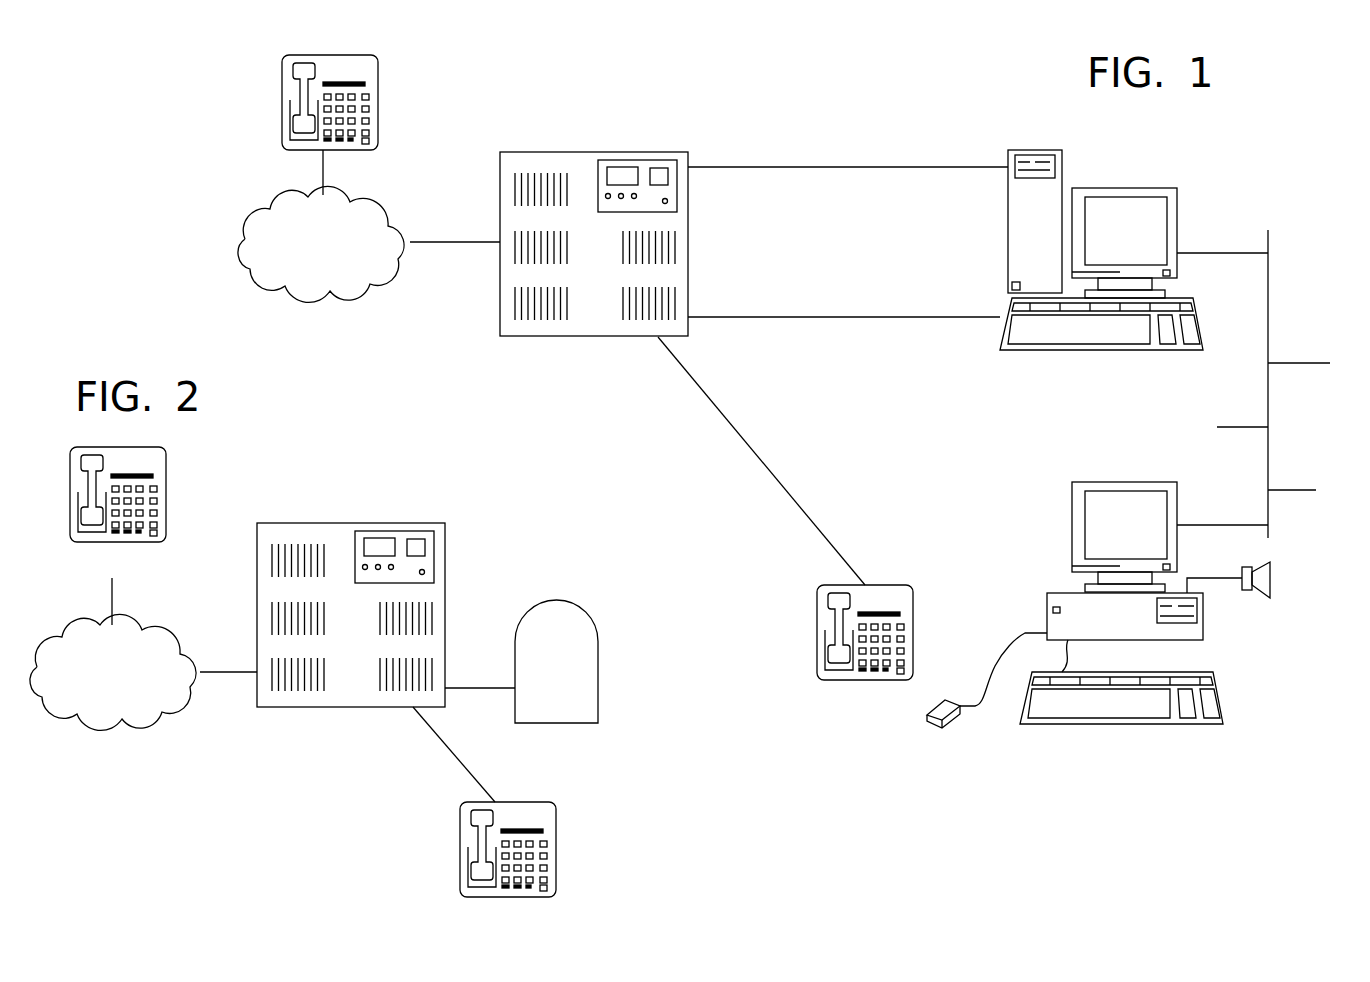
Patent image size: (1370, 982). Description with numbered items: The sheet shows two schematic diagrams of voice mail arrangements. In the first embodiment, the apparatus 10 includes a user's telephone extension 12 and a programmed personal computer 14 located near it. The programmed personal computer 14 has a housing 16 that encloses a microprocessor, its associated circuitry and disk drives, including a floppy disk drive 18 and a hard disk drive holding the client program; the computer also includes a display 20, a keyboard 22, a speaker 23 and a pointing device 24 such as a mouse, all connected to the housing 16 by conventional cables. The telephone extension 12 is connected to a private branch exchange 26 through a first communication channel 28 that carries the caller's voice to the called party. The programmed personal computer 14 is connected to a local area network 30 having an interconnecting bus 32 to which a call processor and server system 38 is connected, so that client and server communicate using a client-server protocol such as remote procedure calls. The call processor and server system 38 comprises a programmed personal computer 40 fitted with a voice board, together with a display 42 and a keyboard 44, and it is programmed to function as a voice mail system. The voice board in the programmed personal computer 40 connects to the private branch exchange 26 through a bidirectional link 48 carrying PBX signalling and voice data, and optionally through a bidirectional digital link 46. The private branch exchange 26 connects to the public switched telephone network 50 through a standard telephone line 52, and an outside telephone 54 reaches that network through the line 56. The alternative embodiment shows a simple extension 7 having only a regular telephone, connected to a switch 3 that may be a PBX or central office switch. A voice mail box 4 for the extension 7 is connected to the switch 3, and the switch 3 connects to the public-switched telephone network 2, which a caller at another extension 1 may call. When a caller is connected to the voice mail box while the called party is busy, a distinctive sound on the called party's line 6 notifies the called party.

In FIG. 2, the extension 1 is at (167, 490).
In FIG. 2, the public-switched telephone network 2 is at (120, 722).
In FIG. 2, the switch 3 is at (342, 523).
In FIG. 2, the voice mail box 4 is at (598, 705).
In FIG. 2, the called party's line 6 is at (455, 757).
In FIG. 2, the extension 7 is at (555, 850).
In FIG. 1, the apparatus 10 is at (732, 462).
In FIG. 1, the telephone extension 12 is at (913, 640).
In FIG. 1, the programmed personal computer 14 is at (1110, 604).
In FIG. 1, the housing 16 is at (1057, 593).
In FIG. 1, the floppy disk drive 18 is at (1195, 605).
In FIG. 1, the display 20 is at (1147, 482).
In FIG. 1, the keyboard 22 is at (1060, 725).
In FIG. 1, the speaker 23 is at (1270, 578).
In FIG. 1, the pointing device 24 is at (928, 718).
In FIG. 1, the private branch exchange 26 is at (588, 152).
In FIG. 1, the first communication channel 28 is at (751, 450).
In FIG. 1, the local area network 30 is at (1264, 384).
In FIG. 1, the interconnecting bus 32 is at (1268, 335).
In FIG. 1, the call processor and server system 38 is at (1122, 259).
In FIG. 1, the programmed personal computer 40 is at (1062, 160).
In FIG. 1, the display 42 is at (1177, 215).
In FIG. 1, the keyboard 44 is at (1040, 348).
In FIG. 1, the bidirectional digital link 46 is at (835, 317).
In FIG. 1, the bidirectional link 48 is at (835, 167).
In FIG. 1, the public switched telephone network 50 is at (330, 293).
In FIG. 1, the standard telephone line 52 is at (453, 242).
In FIG. 1, the outside telephone 54 is at (378, 100).
In FIG. 1, the line 56 is at (323, 172).